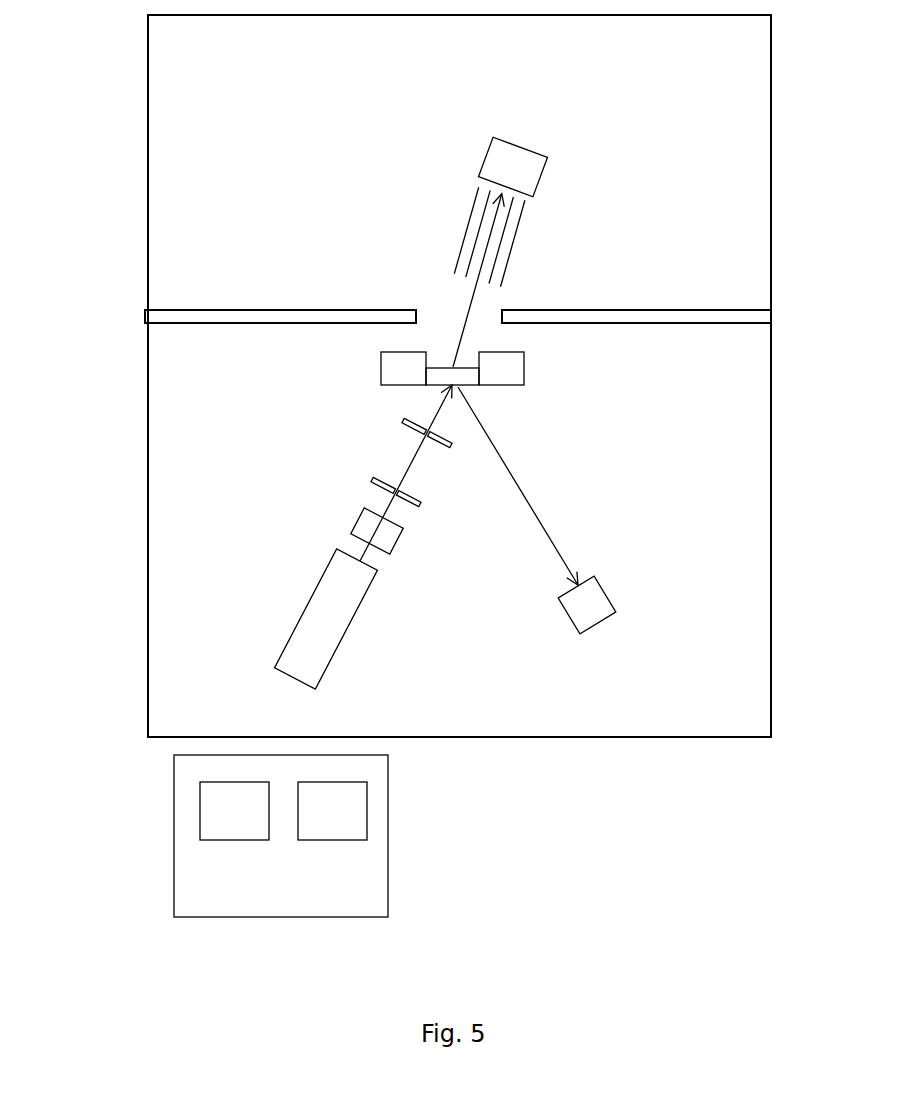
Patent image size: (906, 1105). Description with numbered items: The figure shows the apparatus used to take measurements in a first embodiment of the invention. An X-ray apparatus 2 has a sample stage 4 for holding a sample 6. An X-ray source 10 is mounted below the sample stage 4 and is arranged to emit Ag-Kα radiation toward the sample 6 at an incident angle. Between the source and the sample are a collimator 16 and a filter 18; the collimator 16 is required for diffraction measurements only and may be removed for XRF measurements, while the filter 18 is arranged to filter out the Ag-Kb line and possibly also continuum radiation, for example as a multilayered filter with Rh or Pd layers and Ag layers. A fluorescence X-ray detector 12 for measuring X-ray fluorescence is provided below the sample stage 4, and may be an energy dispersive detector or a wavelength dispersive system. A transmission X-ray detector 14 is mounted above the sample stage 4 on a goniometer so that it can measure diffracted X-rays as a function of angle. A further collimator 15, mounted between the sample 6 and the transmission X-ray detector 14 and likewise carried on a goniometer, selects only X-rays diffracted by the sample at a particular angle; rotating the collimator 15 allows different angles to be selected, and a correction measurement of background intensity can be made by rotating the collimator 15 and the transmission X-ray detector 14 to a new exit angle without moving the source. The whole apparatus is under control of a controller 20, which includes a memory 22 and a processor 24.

The X-ray apparatus 2 is at (152, 172).
The sample stage 4 is at (400, 368).
The sample 6 is at (440, 377).
The X-ray source 10 is at (325, 618).
The fluorescence X-ray detector 12 is at (597, 607).
The transmission X-ray detector 14 is at (515, 172).
The collimator 15 is at (505, 272).
The collimator 16 is at (404, 420).
The filter 18 is at (377, 535).
The controller 20 is at (378, 910).
The memory 22 is at (337, 817).
The processor 24 is at (220, 805).